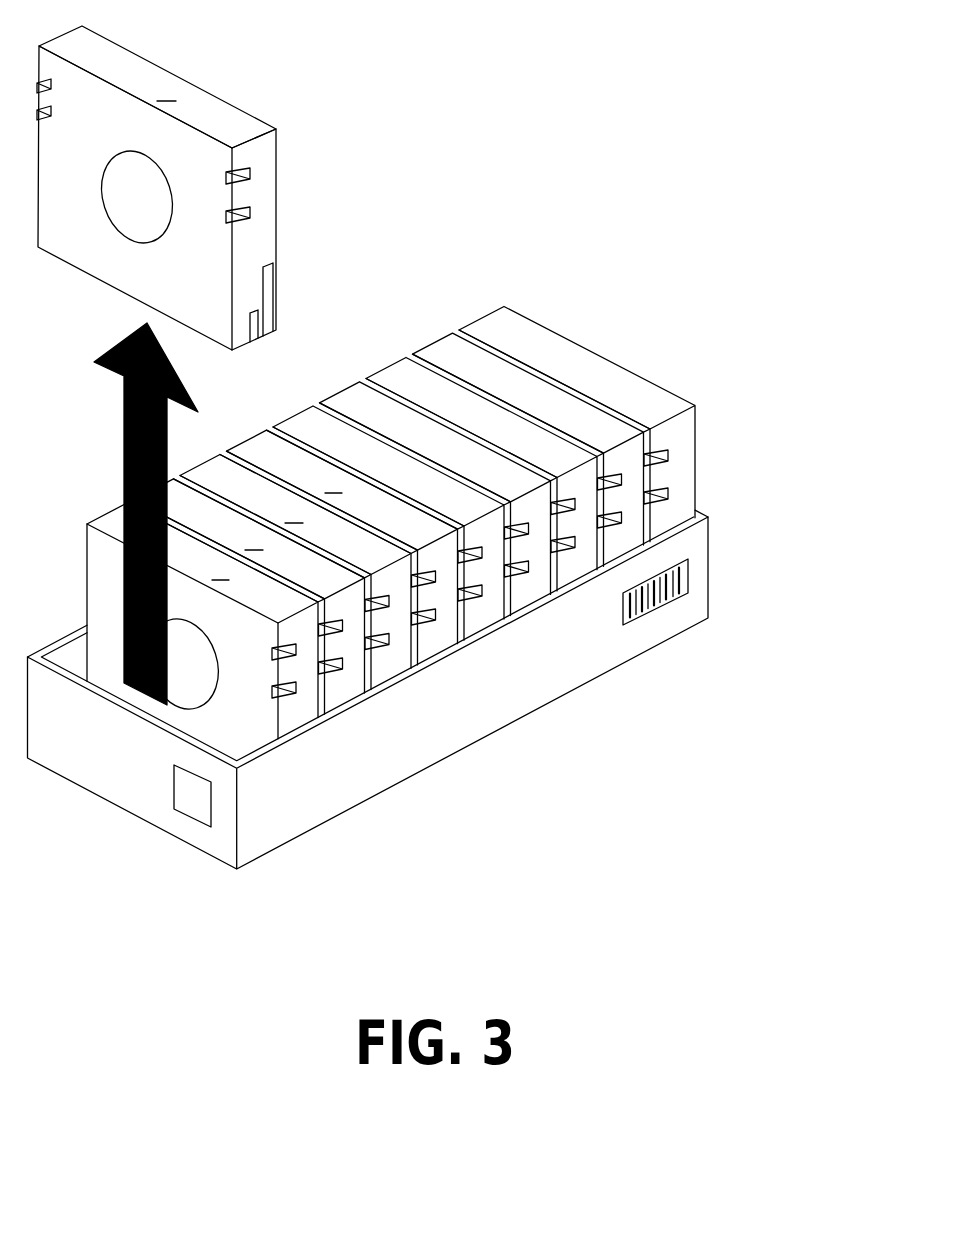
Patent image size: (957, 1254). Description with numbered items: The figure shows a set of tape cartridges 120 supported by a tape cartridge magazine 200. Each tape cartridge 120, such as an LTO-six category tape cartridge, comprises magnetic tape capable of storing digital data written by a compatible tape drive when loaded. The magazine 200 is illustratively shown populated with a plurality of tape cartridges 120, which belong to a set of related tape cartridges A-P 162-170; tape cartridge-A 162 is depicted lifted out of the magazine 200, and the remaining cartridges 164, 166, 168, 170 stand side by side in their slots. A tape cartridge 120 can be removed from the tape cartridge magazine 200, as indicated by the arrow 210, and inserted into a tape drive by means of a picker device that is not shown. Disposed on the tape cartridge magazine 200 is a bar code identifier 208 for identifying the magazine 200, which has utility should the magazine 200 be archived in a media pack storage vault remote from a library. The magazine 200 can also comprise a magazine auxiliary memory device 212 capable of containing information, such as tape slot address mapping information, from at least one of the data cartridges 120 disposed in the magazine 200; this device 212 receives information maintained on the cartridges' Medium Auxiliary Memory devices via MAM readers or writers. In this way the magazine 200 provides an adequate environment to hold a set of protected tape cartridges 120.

The tape cartridge-A 162 is at (277, 245).
The tape cartridges 120 is at (532, 325).
The tape cartridge 164 is at (305, 704).
The tape cartridge 166 is at (352, 678).
The tape cartridge 168 is at (400, 657).
The tape cartridge 170 is at (448, 635).
The tape cartridge magazine 200 is at (708, 565).
The bar code identifier 208 is at (635, 627).
The magazine auxiliary memory device 212 is at (183, 787).
The arrow 210 is at (122, 483).